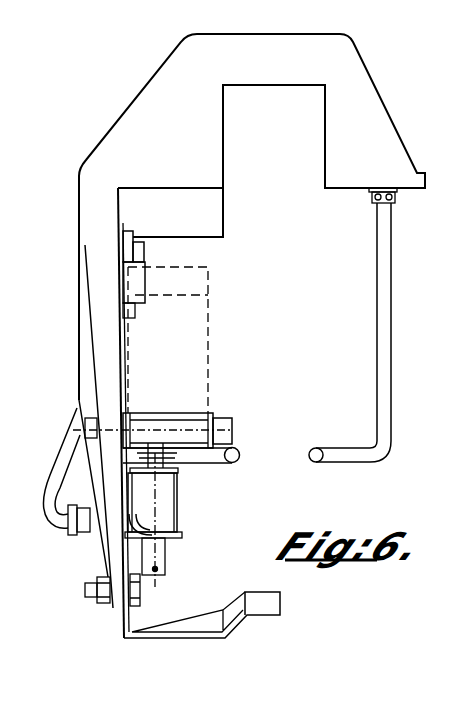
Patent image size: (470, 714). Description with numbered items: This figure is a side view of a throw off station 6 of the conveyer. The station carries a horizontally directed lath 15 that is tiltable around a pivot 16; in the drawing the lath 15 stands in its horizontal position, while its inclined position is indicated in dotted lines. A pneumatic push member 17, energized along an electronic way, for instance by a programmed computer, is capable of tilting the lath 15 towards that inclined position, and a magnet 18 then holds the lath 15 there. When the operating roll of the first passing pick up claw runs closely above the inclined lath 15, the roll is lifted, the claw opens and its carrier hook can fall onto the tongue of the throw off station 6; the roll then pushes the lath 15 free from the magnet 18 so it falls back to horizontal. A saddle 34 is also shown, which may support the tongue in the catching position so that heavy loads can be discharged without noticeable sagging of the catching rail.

The throw off station 6 is at (101, 226).
The lath 15 is at (198, 338).
The pivot 16 is at (222, 425).
The pneumatic push member 17 is at (172, 496).
The magnet 18 is at (138, 284).
The saddle 34 is at (272, 602).